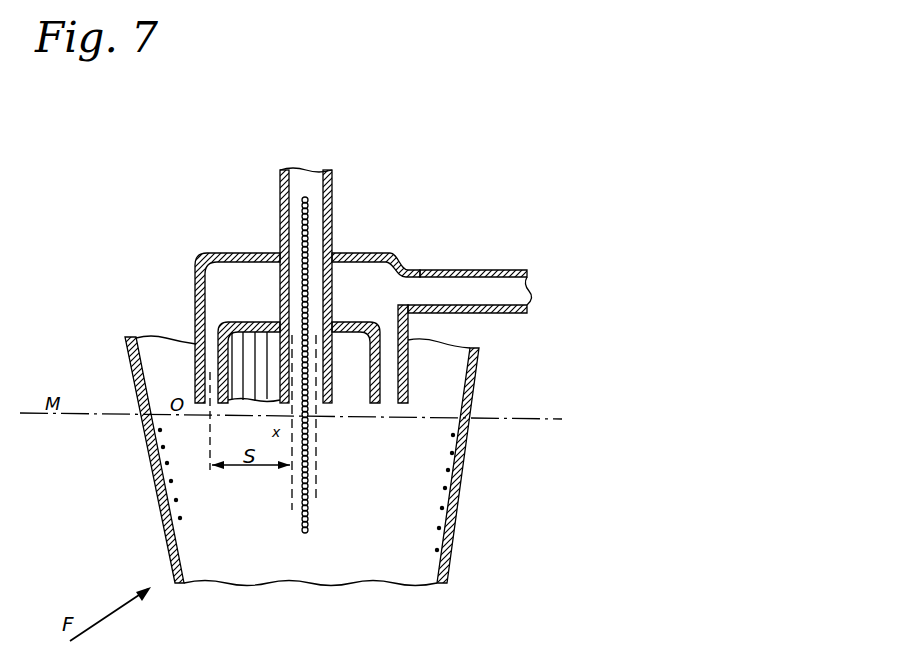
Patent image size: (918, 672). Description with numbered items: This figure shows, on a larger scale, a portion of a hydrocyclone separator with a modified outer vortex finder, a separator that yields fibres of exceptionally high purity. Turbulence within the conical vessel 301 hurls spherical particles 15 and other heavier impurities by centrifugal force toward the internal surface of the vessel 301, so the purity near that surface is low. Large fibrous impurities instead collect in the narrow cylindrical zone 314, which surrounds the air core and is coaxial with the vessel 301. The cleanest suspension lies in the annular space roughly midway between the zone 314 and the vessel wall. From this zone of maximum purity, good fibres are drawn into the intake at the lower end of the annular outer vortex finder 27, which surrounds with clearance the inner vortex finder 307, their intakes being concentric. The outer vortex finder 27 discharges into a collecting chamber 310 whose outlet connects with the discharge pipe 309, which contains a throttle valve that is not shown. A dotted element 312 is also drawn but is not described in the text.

The inner vortex finder 307 is at (333, 207).
The collecting chamber 310 is at (379, 276).
The discharge pipe 309 is at (477, 287).
The annular outer vortex finder 27 is at (414, 381).
The conical vessel 301 is at (465, 500).
The spherical particles 15 is at (180, 518).
The coil probe 312 is at (305, 532).
The narrow cylindrical zone 314 is at (317, 497).